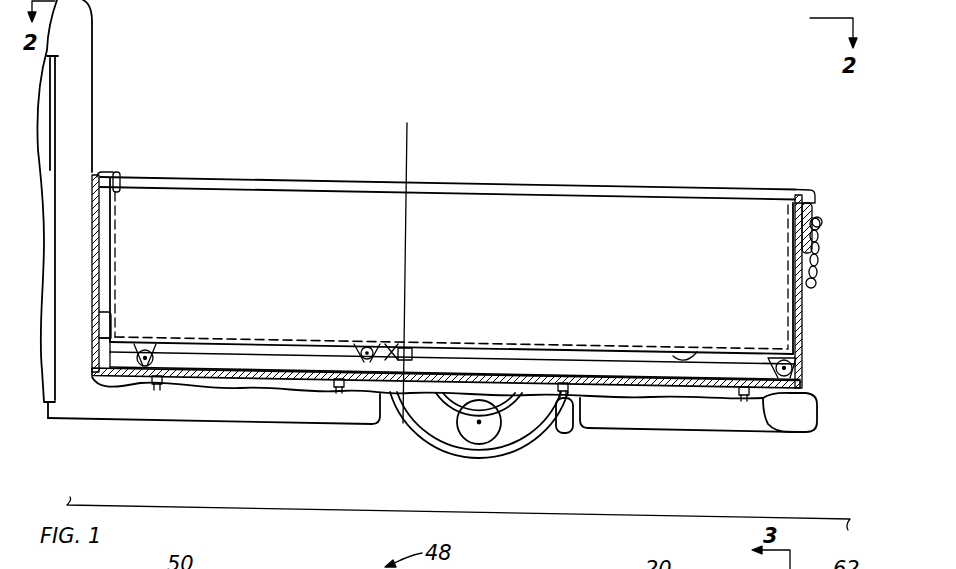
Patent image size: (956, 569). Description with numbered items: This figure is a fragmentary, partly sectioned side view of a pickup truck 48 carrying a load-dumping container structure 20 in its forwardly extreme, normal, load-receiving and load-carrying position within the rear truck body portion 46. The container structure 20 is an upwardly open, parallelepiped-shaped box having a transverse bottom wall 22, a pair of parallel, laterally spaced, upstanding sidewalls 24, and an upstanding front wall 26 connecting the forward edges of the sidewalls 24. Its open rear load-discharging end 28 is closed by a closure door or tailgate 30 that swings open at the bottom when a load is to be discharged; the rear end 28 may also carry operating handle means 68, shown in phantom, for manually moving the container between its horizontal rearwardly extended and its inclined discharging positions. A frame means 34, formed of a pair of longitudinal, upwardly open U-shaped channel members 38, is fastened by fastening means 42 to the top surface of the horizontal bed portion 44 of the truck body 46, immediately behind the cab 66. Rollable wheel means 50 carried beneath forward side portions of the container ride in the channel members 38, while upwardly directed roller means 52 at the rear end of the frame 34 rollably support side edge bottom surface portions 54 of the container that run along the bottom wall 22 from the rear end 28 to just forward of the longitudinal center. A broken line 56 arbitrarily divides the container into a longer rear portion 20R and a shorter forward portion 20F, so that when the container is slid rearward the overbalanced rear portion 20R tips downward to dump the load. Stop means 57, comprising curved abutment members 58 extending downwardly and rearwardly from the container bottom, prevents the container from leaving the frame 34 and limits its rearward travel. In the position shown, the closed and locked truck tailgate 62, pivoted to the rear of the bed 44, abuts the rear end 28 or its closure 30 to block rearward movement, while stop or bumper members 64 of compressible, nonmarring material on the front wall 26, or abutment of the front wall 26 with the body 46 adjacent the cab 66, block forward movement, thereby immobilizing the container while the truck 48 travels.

The container structure 20 is at (636, 188).
The forward portion of the container structure 20F is at (195, 187).
The rear portion of the container structure 20R is at (565, 188).
The bottom wall 22 is at (553, 343).
The sidewalls 24 is at (451, 296).
The front wall 26 is at (115, 252).
The open rear load-discharging end 28 is at (776, 252).
The closure door or tailgate 30 is at (800, 312).
The frame means 34 is at (276, 352).
The U-shaped channel members 38 is at (315, 350).
The fastening means 42 is at (157, 392).
The bed portion 44 is at (247, 378).
The rear truck body portion 46 is at (228, 417).
The pickup truck 48 is at (250, 70).
The rollable wheel means 50 is at (176, 327).
The roller means 52 is at (767, 350).
The side edge bottom surface portions 54 is at (685, 349).
The broken division line 56 is at (410, 167).
The stop means 57 is at (420, 354).
The curved abutment members 58 is at (412, 356).
The tailgate of the pickup truck 62 is at (805, 295).
The stop or bumper members 64 is at (100, 310).
The cab 66 is at (93, 128).
The operating handle means 68 is at (793, 190).